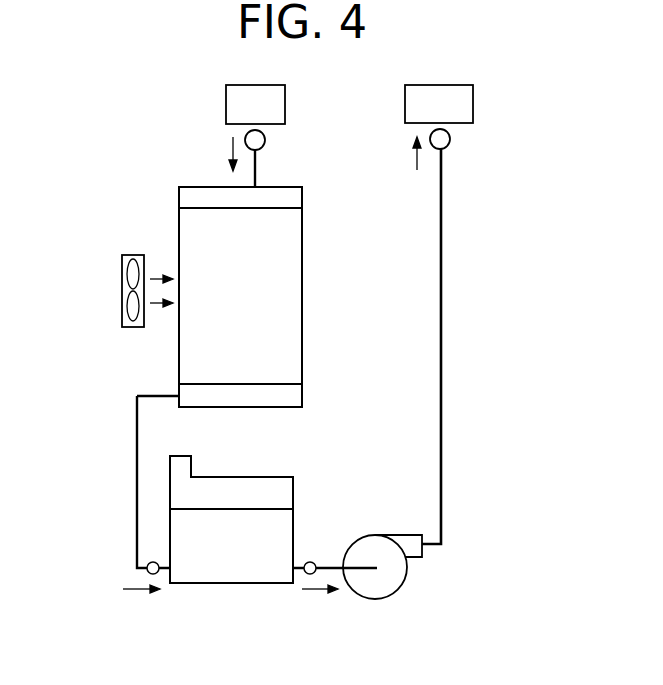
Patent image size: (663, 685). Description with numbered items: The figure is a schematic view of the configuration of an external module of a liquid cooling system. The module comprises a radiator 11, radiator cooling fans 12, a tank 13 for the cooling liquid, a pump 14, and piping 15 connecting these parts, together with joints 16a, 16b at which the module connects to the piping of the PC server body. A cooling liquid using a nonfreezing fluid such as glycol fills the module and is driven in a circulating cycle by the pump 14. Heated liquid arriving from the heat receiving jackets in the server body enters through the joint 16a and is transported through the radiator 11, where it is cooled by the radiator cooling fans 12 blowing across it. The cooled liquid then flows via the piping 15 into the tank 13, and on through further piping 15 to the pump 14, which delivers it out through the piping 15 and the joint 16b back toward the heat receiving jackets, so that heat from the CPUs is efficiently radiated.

The radiator 11 is at (196, 222).
The radiator cooling fans 12 is at (122, 313).
The tank 13 is at (183, 533).
The pump 14 is at (388, 583).
The piping 15 is at (442, 340).
The joint 16a is at (245, 139).
The joint 16b is at (450, 139).